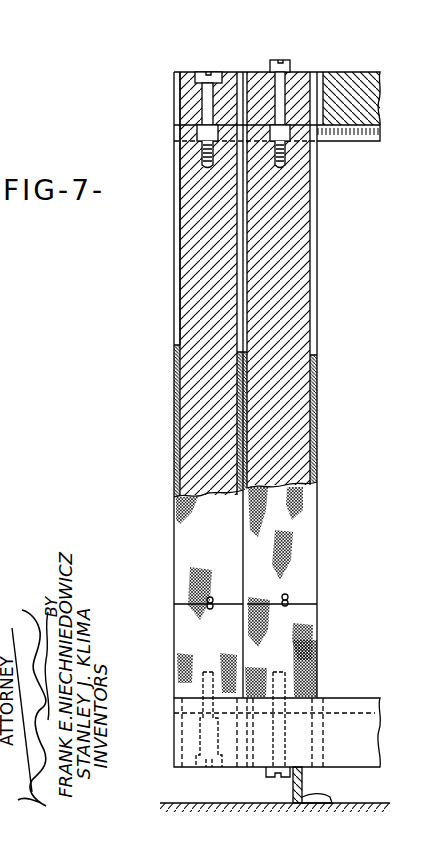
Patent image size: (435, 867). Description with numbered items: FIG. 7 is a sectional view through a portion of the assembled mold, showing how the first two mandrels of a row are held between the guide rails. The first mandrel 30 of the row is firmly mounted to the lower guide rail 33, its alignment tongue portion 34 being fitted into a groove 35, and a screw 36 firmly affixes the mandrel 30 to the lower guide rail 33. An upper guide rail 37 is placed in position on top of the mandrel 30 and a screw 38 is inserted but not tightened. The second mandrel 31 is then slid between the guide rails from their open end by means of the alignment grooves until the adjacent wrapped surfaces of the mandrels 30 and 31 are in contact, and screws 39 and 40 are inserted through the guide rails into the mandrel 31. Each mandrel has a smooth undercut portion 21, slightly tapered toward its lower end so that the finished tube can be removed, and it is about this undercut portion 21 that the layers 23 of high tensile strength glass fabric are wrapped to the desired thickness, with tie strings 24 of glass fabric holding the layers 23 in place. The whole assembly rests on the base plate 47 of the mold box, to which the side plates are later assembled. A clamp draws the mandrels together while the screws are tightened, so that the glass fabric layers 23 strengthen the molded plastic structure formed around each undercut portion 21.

The undercut portion 21 is at (175, 393).
The layers of glass fabric 23 is at (260, 543).
The tie strings 24 is at (298, 600).
The mandrel 30 is at (198, 240).
The mandrel 31 is at (286, 240).
The lower guide rail 33 is at (342, 718).
The alignment tongue portion 34 is at (180, 132).
The groove 35 is at (357, 141).
The screw 36 is at (205, 770).
The upper guide rail 37 is at (362, 72).
The screw 38 is at (208, 72).
The screw 39 is at (272, 779).
The screw 40 is at (285, 60).
The base plate 47 is at (378, 803).